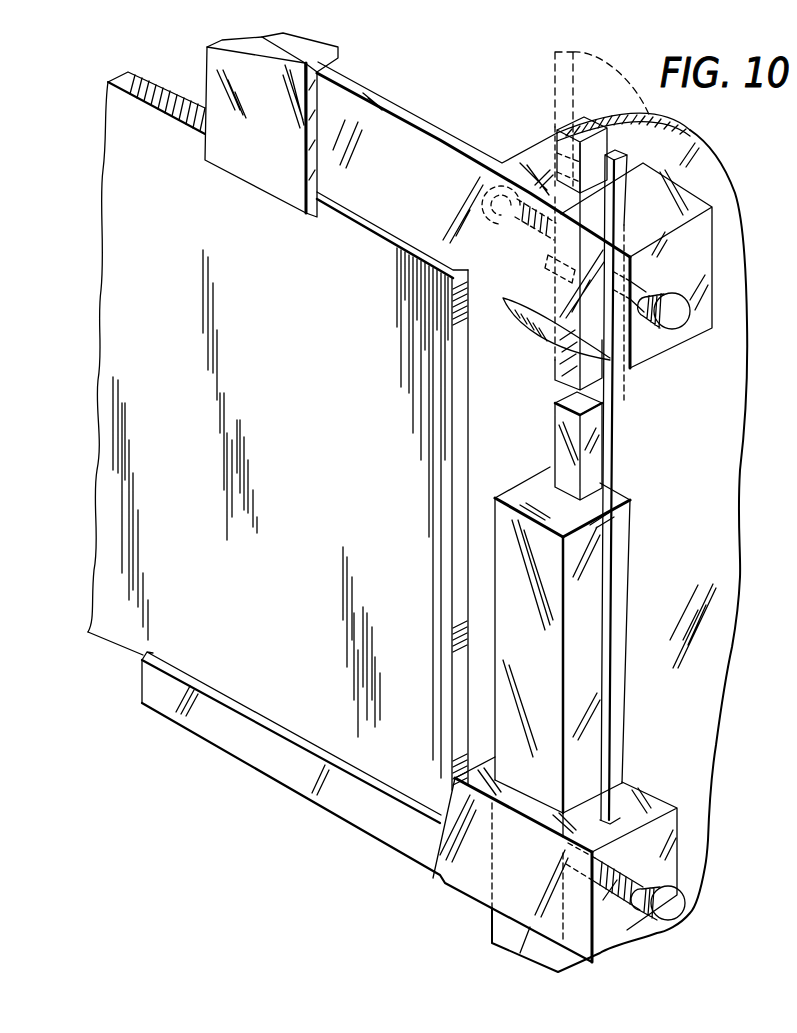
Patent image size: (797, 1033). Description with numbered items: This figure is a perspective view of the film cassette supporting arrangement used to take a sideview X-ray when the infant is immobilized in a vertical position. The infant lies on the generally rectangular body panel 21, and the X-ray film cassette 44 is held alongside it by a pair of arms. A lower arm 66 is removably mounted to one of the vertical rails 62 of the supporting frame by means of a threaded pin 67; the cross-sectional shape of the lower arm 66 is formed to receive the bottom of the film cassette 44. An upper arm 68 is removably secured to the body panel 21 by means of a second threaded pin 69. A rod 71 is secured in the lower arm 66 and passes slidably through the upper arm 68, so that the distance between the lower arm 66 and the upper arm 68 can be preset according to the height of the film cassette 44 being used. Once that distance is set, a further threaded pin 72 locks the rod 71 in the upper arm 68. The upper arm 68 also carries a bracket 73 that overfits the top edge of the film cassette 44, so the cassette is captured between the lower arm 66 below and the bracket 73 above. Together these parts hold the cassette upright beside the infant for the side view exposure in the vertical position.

The body panel 21 is at (720, 484).
The film cassette 44 is at (318, 436).
The vertical rail 62 is at (507, 678).
The lower arm 66 is at (463, 873).
The threaded pin 67 is at (671, 906).
The upper arm 68 is at (396, 137).
The threaded pin 69 is at (487, 203).
The rod 71 is at (612, 460).
The threaded pin 72 is at (673, 318).
The bracket 73 is at (259, 170).